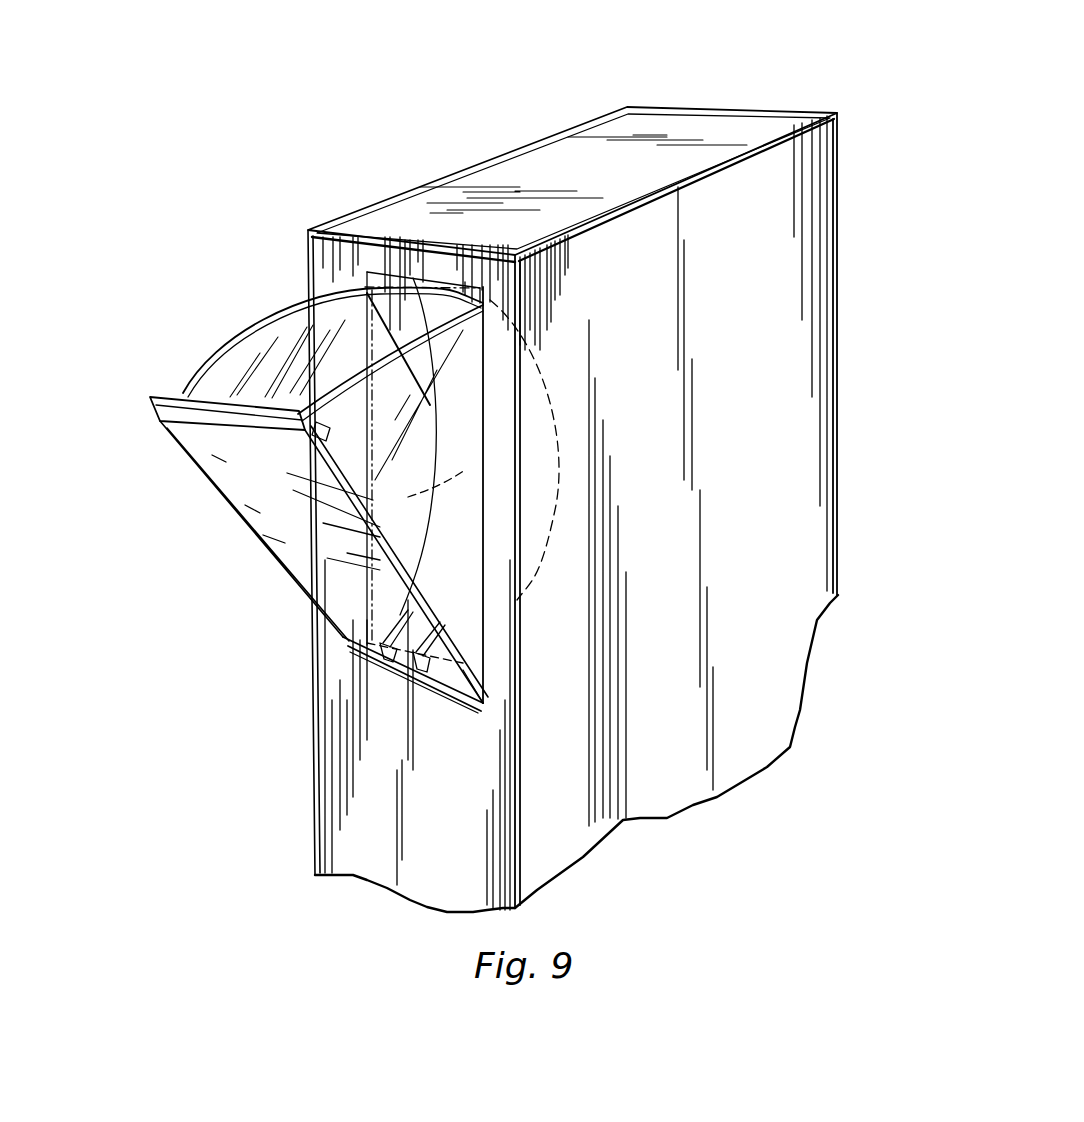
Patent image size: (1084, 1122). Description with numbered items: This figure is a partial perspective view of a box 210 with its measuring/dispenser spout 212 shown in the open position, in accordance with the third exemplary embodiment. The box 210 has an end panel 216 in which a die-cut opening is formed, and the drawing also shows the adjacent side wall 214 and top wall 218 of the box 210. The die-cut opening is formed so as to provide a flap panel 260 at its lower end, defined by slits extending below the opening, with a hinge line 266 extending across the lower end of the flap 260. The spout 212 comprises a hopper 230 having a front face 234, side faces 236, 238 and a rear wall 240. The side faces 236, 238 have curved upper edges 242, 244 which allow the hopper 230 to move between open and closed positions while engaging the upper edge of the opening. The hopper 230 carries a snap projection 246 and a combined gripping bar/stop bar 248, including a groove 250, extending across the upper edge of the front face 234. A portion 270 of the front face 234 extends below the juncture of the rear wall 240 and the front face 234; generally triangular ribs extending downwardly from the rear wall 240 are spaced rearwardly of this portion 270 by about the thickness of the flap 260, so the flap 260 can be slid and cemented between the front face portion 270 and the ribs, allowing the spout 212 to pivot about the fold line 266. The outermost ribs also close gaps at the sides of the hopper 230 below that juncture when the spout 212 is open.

The box 210 is at (868, 312).
The measuring/dispenser spout 212 is at (236, 546).
The side wall 214 is at (803, 437).
The end panel 216 is at (465, 803).
The top wall 218 is at (640, 130).
The hopper 230 is at (190, 357).
The front face 234 is at (210, 448).
The side face 236 is at (278, 316).
The side face 238 is at (462, 403).
The rear wall 240 is at (421, 483).
The curved upper edge 242 is at (237, 318).
The curved upper edge 244 is at (420, 318).
The snap projection 246 is at (318, 422).
The gripping bar/stop bar 248 is at (175, 417).
The groove 250 is at (223, 460).
The flap panel 260 is at (372, 673).
The hinge line 266 is at (473, 705).
The front face portion 270 is at (457, 690).